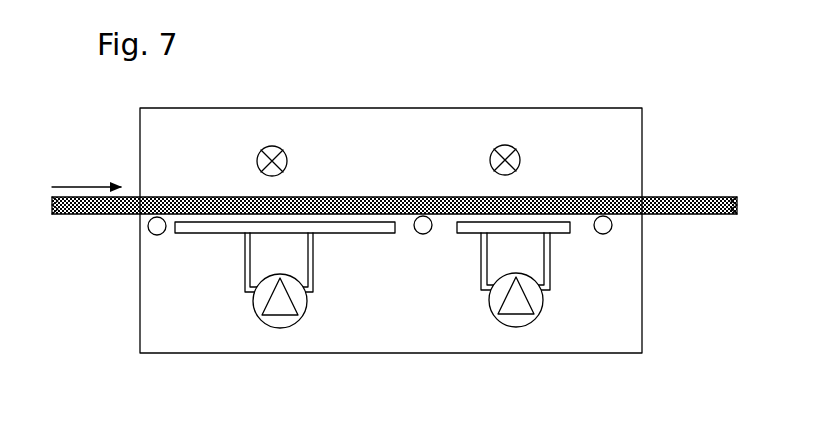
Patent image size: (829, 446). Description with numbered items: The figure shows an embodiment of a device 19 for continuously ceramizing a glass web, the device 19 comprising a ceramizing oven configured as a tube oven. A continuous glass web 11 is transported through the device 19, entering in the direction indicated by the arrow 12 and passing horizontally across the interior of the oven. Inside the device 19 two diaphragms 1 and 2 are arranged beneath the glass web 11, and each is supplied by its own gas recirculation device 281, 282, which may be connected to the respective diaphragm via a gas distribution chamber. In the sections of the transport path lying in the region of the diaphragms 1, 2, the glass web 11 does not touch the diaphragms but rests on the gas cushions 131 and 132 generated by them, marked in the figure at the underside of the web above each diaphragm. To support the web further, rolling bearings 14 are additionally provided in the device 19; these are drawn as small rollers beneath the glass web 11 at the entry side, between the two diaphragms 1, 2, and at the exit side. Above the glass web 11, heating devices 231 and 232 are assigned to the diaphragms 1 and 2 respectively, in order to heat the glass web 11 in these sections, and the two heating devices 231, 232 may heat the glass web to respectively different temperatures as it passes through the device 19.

The diaphragm 1 is at (202, 234).
The diaphragm 2 is at (458, 235).
The continuous glass web 11 is at (540, 197).
The web travel direction 12 is at (86, 187).
The rolling bearings 14 is at (150, 234).
The device 19 is at (193, 354).
The gas cushion 131 is at (248, 213).
The gas cushion 132 is at (468, 212).
The heating device 231 is at (276, 146).
The heating device 232 is at (510, 145).
The gas recirculation device 281 is at (290, 327).
The gas recirculation device 282 is at (522, 327).